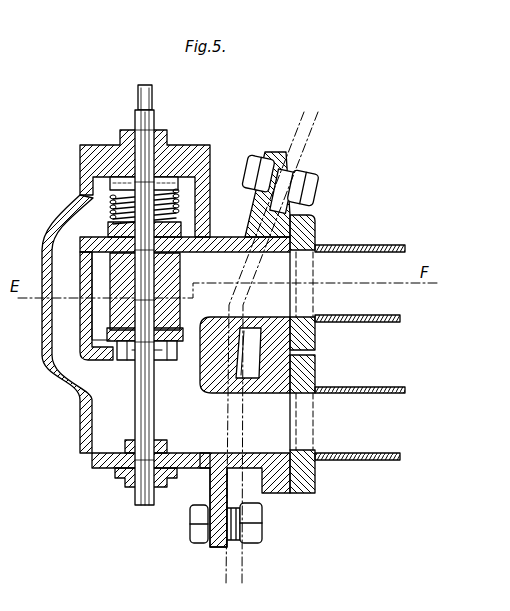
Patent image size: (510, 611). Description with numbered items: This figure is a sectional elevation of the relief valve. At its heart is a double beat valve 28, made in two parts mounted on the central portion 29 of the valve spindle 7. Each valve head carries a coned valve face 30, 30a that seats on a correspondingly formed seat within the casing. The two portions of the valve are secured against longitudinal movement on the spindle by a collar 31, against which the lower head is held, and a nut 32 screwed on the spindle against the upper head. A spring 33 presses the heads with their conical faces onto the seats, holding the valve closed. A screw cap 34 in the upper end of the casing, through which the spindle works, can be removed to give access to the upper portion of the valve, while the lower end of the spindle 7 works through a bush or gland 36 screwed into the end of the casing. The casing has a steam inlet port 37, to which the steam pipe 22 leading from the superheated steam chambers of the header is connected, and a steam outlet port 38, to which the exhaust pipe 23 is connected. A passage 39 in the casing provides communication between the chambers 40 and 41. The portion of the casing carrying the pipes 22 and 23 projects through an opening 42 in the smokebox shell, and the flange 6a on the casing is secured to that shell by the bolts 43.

The valve spindle 7 is at (138, 504).
The steam pipe 22 is at (376, 258).
The exhaust pipe 23 is at (358, 460).
The double beat valve 28 is at (168, 297).
The central portion of the valve spindle 29 is at (140, 312).
The coned valve face 30 is at (183, 228).
The coned valve face 30a is at (194, 335).
The collar 31 is at (167, 343).
The nut 32 is at (178, 206).
The spring 33 is at (93, 190).
The screw cap 34 is at (170, 157).
The bush or gland 36 is at (117, 470).
The steam inlet port 37 is at (282, 273).
The steam outlet port 38 is at (245, 432).
The passage 39 is at (63, 243).
The chamber 40 is at (212, 172).
The chamber 41 is at (87, 383).
The opening 42 is at (280, 210).
The bolts 43 is at (300, 168).
The flange 6a is at (210, 493).